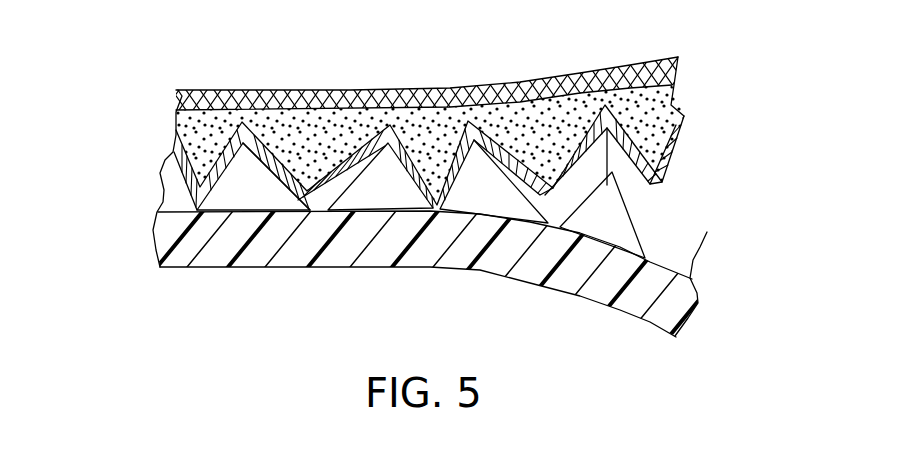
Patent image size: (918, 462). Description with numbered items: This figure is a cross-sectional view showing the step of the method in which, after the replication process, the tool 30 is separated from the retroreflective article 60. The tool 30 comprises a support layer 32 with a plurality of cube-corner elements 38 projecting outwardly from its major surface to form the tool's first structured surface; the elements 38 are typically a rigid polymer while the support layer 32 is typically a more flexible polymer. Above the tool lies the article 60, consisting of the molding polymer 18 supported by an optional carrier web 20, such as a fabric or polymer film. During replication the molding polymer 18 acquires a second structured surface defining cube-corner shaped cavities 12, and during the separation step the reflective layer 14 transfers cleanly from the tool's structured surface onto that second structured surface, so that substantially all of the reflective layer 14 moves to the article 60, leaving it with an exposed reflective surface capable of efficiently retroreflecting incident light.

The carrier web 20 is at (231, 96).
The molding polymer 18 is at (188, 131).
The reflective layer 14 is at (182, 181).
The cube-corner shaped cavities 12 is at (620, 191).
The cube-corner elements 38 is at (605, 228).
The support layer 32 is at (343, 256).
The tool 30 is at (730, 235).
The retroreflective article 60 is at (685, 53).